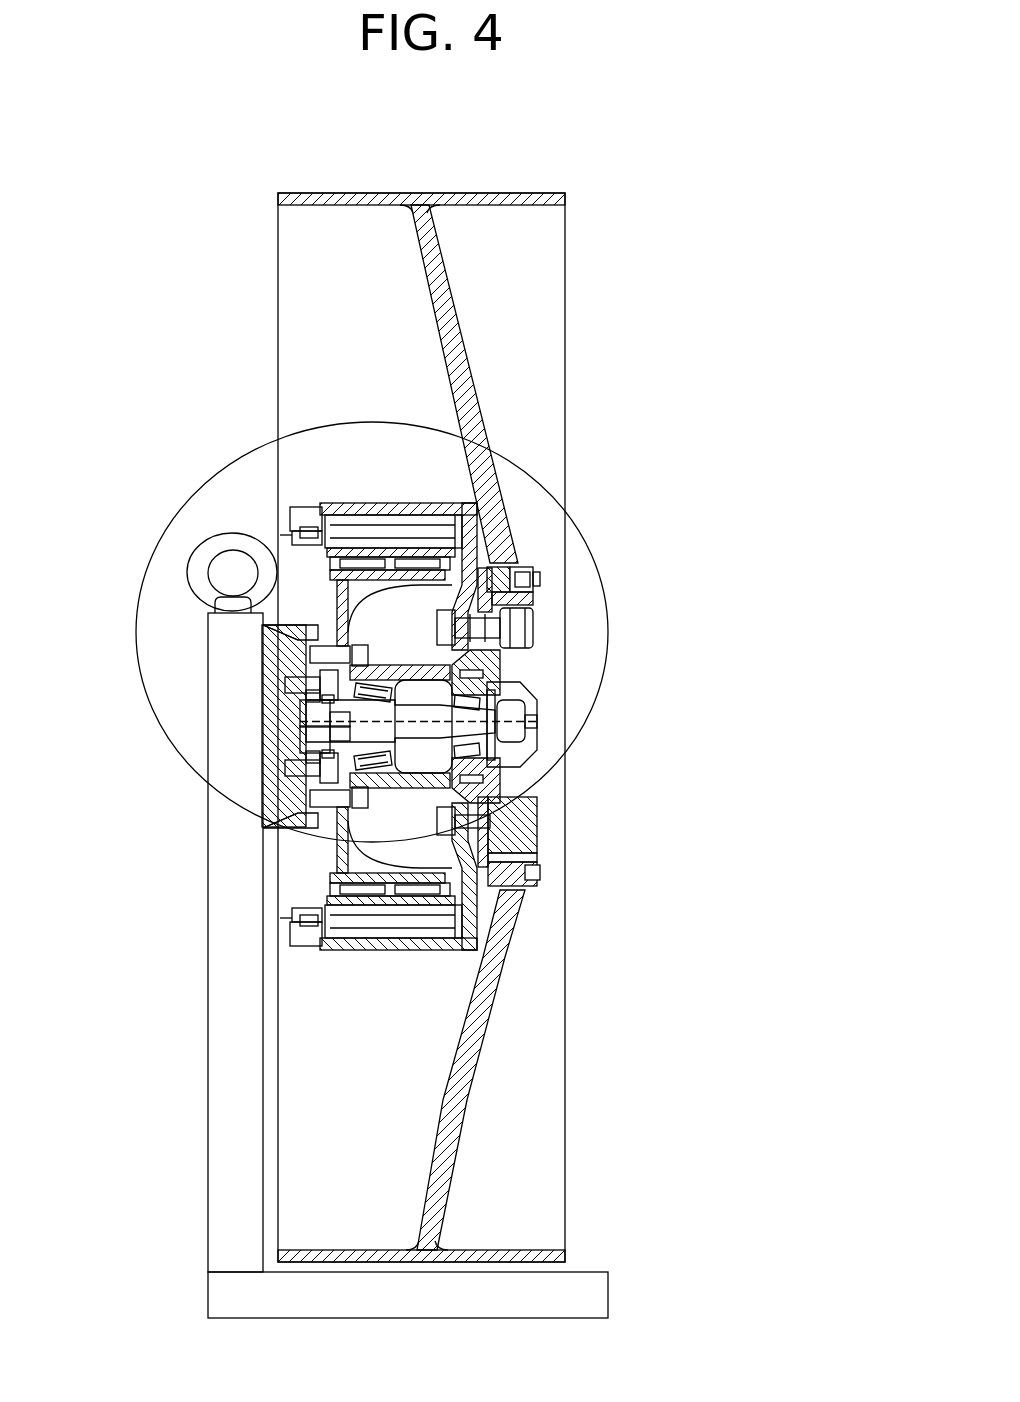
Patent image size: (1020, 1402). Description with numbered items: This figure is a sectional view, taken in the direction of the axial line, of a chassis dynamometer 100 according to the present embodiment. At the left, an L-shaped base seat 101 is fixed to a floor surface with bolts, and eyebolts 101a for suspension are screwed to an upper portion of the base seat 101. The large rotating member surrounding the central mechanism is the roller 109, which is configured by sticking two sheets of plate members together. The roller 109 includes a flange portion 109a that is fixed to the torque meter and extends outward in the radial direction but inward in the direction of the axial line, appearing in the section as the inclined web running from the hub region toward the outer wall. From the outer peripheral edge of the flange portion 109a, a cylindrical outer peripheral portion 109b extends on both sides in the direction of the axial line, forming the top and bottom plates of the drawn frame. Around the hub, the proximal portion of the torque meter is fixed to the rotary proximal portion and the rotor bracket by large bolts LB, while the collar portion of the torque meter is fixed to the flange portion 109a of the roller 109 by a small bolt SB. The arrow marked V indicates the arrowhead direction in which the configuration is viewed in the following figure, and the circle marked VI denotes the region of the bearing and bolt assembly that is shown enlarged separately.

The chassis dynamometer 100 is at (614, 283).
The base seat 101 is at (208, 963).
The eyebolt 101a is at (214, 546).
The roller 109 is at (495, 193).
The flange portion 109a is at (480, 386).
The cylindrical outer peripheral portion 109b is at (320, 205).
The small bolt SB is at (540, 576).
The large bolt LB is at (535, 624).
The arrowhead direction V is at (598, 724).
The enlarged region VI is at (217, 472).